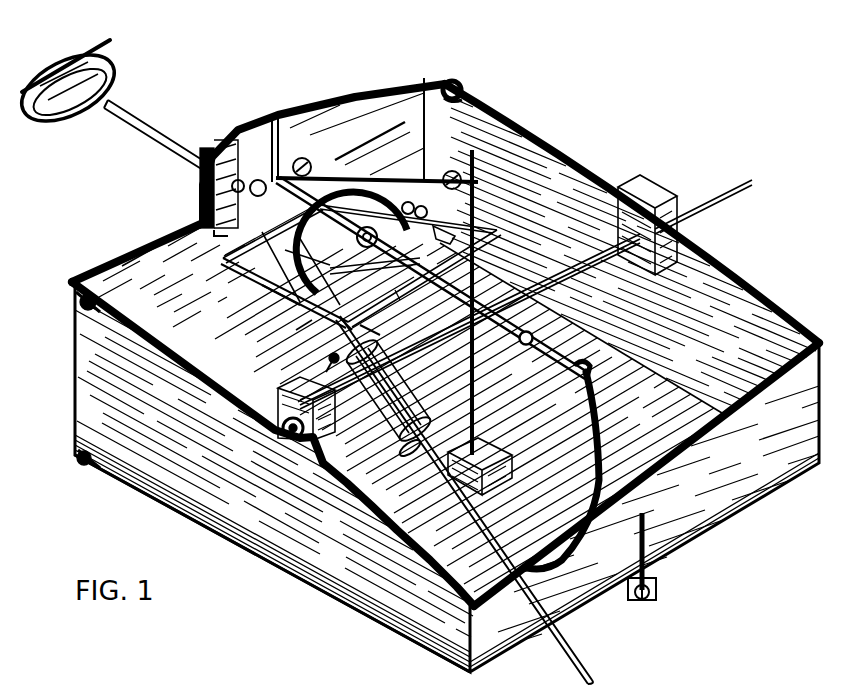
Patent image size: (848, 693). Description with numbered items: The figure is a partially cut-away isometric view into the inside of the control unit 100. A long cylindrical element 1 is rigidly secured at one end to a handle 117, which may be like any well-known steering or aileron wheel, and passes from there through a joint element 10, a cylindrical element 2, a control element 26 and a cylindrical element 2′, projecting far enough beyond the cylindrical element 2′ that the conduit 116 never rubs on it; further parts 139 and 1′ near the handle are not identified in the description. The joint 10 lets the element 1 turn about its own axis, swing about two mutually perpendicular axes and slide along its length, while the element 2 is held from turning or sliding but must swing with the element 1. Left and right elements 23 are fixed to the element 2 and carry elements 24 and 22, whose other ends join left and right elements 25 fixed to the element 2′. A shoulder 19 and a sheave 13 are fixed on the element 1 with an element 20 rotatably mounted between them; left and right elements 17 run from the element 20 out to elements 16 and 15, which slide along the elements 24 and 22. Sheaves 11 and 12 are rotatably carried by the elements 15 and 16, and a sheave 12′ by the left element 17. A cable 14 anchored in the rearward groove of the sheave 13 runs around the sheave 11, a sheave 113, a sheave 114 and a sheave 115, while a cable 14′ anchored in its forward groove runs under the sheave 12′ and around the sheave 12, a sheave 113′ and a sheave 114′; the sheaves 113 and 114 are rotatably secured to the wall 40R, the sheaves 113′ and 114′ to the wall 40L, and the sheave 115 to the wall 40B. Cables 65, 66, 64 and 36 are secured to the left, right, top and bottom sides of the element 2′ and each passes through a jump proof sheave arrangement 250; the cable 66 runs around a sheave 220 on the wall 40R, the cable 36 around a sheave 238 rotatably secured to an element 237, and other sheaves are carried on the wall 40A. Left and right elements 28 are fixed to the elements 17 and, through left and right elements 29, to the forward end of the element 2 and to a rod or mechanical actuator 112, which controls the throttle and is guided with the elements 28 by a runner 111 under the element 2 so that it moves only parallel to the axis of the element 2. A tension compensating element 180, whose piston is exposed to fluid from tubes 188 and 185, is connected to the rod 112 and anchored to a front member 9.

The long cylindrical element 1 is at (140, 110).
The cord end hook 1′ is at (578, 374).
The cylindrical element 2 is at (306, 198).
The cylindrical element 2′ is at (416, 290).
The front member 9 is at (318, 106).
The joint element 10 is at (260, 178).
The sheave 11 is at (272, 256).
The sheave 12 is at (452, 171).
The sheave 12′ is at (404, 206).
The sheave 13 is at (366, 305).
The cable 14 is at (140, 262).
The cable 14′ is at (458, 99).
The right element 15 is at (270, 300).
The left element 16 is at (436, 270).
The left and right elements 17 is at (370, 210).
The shoulder 19 is at (365, 290).
The element 20 is at (362, 237).
The element 22 is at (256, 281).
The left and right elements 23 is at (224, 260).
The element 24 is at (497, 233).
The left and right elements 25 is at (377, 318).
The control element 26 is at (298, 330).
The left and right elements 28 is at (445, 236).
The left and right elements 29 is at (306, 250).
The cable 36 is at (639, 542).
The wall 40A is at (690, 434).
The wall 40B is at (398, 636).
The wall 40L is at (734, 290).
The wall 40R is at (370, 504).
The cable 64 is at (476, 172).
The cable 65 is at (720, 192).
The cable 66 is at (445, 334).
The control unit 100 is at (622, 122).
The runner 111 is at (216, 236).
The rod or mechanical actuator 112 is at (556, 650).
The sheave 113 is at (238, 194).
The sheave 113′ is at (304, 160).
The sheave 114 is at (90, 312).
The sheave 114′ is at (455, 86).
The sheave 115 is at (88, 470).
The conduit 116 is at (592, 388).
The handle 117 is at (122, 48).
The handle grip 139 is at (90, 34).
The tension compensating element 180 is at (386, 340).
The tube 185 is at (400, 447).
The tube 188 is at (334, 354).
The sheave 220 is at (292, 438).
The sheave mounting element 237 is at (630, 602).
The sheave 238 is at (656, 592).
The jump proof sheave arrangement 250 is at (660, 268).